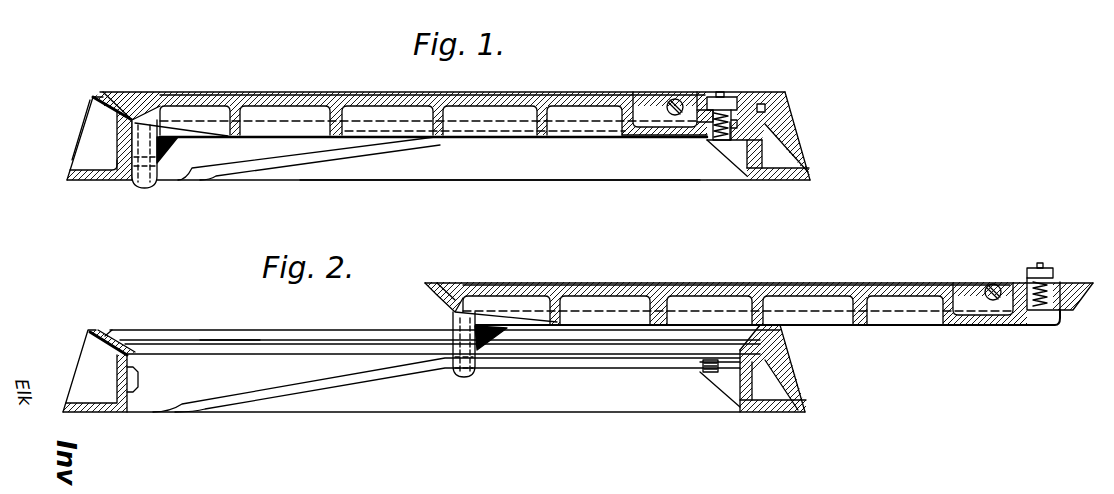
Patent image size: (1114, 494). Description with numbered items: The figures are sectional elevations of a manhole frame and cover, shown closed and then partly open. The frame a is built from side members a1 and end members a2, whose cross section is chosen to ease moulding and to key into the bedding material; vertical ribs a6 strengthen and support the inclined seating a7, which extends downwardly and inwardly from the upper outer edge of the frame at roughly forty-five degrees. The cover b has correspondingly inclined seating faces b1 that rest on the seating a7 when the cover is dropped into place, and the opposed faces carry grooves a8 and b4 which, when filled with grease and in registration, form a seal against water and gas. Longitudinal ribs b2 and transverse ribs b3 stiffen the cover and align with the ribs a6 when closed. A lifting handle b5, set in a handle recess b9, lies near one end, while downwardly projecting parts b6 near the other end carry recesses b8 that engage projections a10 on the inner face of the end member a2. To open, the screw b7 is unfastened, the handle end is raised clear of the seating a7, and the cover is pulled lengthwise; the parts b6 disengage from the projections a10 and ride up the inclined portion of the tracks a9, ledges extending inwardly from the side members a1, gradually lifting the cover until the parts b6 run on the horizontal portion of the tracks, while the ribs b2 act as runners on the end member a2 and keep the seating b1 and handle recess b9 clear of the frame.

In FIG. 1, the frame a is at (438, 163).
In FIG. 2, the frame a is at (445, 371).
In FIG. 1, the side members a1 is at (515, 163).
In FIG. 2, the side members a1 is at (390, 401).
In FIG. 1, the end members a2 is at (117, 143).
In FIG. 2, the end members a2 is at (118, 381).
In FIG. 1, the vertical ribs a6 is at (91, 162).
In FIG. 2, the vertical ribs a6 is at (92, 349).
In FIG. 2, the inclined seating faces a7 is at (138, 350).
In FIG. 1, the grooves or recesses a8 is at (94, 101).
In FIG. 2, the grooves or recesses a8 is at (230, 340).
In FIG. 1, the ledges or tracks a9 is at (228, 163).
In FIG. 2, the ledges or tracks a9 is at (265, 393).
In FIG. 1, the projections a10 is at (125, 165).
In FIG. 2, the projections a10 is at (142, 377).
In FIG. 1, the cover b is at (307, 101).
In FIG. 2, the cover b is at (693, 286).
In FIG. 2, the inclined seating faces b1 is at (437, 296).
In FIG. 1, the longitudinal strengthening ribs b2 is at (388, 126).
In FIG. 2, the longitudinal strengthening ribs b2 is at (810, 319).
In FIG. 1, the transverse strengthening ribs b3 is at (543, 138).
In FIG. 2, the transverse strengthening ribs b3 is at (863, 324).
In FIG. 1, the grooves or recesses b4 is at (121, 112).
In FIG. 2, the grooves or recesses b4 is at (438, 283).
In FIG. 1, the lifting handle b5 is at (675, 98).
In FIG. 2, the lifting handle b5 is at (997, 284).
In FIG. 1, the downwardly projecting parts b6 is at (147, 188).
In FIG. 2, the downwardly projecting parts b6 is at (466, 371).
In FIG. 1, the screw b7 is at (717, 100).
In FIG. 2, the screw b7 is at (1053, 270).
In FIG. 1, the recesses b8 is at (170, 173).
In FIG. 2, the recesses b8 is at (464, 297).
In FIG. 1, the handle recess b9 is at (650, 95).
In FIG. 2, the handle recess b9 is at (972, 285).